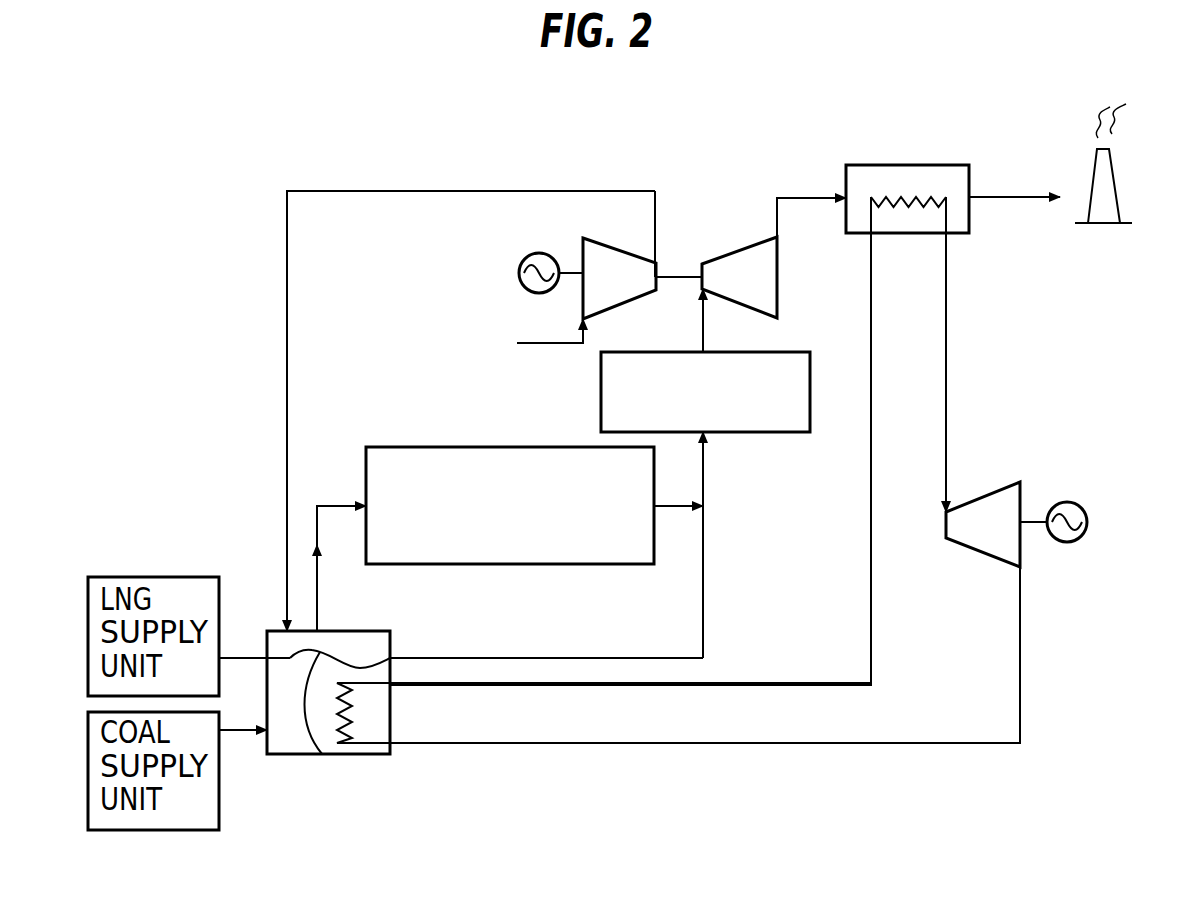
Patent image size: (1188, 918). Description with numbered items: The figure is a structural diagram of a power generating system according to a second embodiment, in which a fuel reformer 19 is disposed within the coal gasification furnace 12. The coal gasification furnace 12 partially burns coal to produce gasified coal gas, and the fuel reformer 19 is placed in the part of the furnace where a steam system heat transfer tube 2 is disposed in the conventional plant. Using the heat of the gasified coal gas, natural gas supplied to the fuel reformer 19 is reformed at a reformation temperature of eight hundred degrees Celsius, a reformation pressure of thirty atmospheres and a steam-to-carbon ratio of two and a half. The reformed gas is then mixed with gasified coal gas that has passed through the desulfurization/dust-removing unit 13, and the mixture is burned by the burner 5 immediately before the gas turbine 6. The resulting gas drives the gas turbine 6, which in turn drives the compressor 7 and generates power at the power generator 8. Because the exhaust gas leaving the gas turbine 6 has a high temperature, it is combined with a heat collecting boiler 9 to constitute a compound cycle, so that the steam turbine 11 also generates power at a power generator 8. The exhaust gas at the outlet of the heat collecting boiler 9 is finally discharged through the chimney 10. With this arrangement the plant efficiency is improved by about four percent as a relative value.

The steam system heat transfer tube 2 is at (350, 707).
The burner 5 is at (740, 432).
The gas turbine 6 is at (777, 292).
The compressor 7 is at (620, 252).
The power generator 8 is at (518, 273).
The heat collecting boiler 9 is at (881, 165).
The chimney 10 is at (1094, 165).
The steam turbine 11 is at (992, 490).
The coal gasification furnace 12 is at (347, 754).
The desulfurization/dust-removing unit 13 is at (405, 447).
The fuel reformer 19 is at (322, 754).